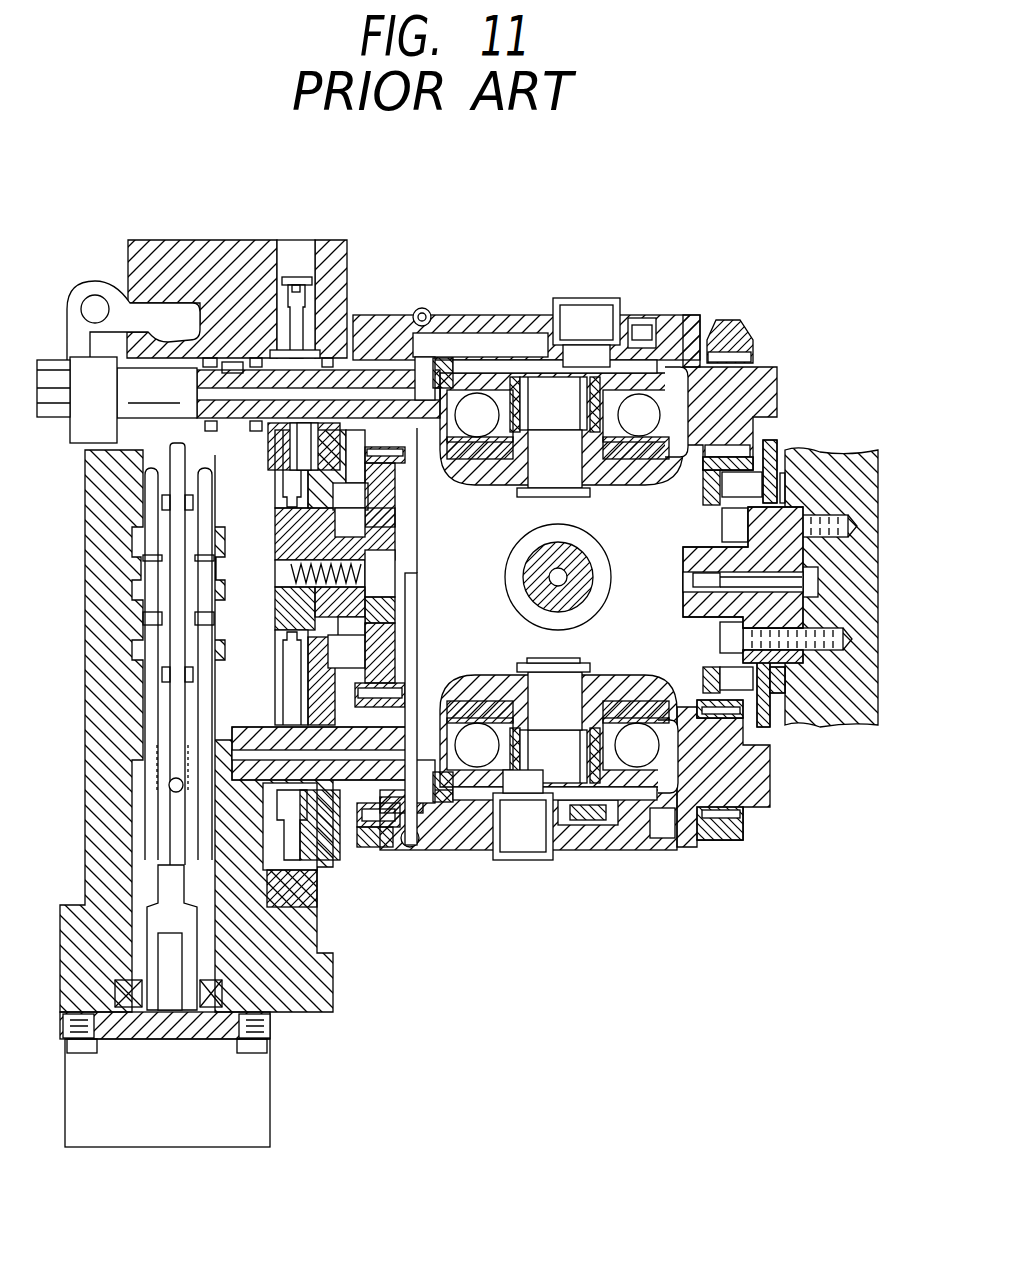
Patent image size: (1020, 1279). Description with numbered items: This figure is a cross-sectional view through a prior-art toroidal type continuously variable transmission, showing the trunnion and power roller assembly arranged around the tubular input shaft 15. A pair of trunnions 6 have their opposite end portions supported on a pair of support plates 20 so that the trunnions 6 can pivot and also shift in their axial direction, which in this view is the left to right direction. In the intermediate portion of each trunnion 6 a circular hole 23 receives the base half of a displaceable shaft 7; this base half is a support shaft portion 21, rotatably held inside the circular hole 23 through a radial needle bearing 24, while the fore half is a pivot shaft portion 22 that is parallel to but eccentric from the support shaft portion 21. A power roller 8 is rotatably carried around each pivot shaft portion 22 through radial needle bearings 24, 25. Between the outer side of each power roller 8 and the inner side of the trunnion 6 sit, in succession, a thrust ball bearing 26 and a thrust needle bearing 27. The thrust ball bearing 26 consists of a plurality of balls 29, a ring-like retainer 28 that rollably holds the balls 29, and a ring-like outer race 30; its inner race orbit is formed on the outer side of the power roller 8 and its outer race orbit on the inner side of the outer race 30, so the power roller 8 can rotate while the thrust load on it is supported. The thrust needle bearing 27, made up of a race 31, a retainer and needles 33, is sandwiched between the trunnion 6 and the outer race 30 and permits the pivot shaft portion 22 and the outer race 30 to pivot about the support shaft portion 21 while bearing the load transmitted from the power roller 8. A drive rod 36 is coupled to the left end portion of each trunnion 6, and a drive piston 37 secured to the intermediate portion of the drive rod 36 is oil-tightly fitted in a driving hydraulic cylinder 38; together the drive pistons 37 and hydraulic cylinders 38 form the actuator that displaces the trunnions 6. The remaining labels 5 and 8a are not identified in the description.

The housing 5 is at (340, 355).
The trunnion 6 is at (683, 322).
The displaceable shaft 7 is at (543, 392).
The power roller 8 is at (637, 450).
The mounting wall 8a is at (765, 437).
The input shaft 15 is at (525, 585).
The support plate 20 is at (392, 646).
The support shaft portion 21 is at (575, 320).
The pivot shaft portion 22 is at (567, 478).
The circular hole 23 is at (598, 345).
The radial needle bearing 24 is at (648, 317).
The radial needle bearing 25 is at (512, 455).
The thrust ball bearing 26 is at (645, 437).
The thrust needle bearing 27 is at (728, 323).
The retainer 28 is at (420, 357).
The ball 29 is at (478, 398).
The outer race 30 is at (755, 397).
The race 31 is at (668, 852).
The needle 33 is at (455, 372).
The drive rod 36 is at (117, 390).
The drive piston 37 is at (290, 300).
The hydraulic cylinder 38 is at (265, 303).